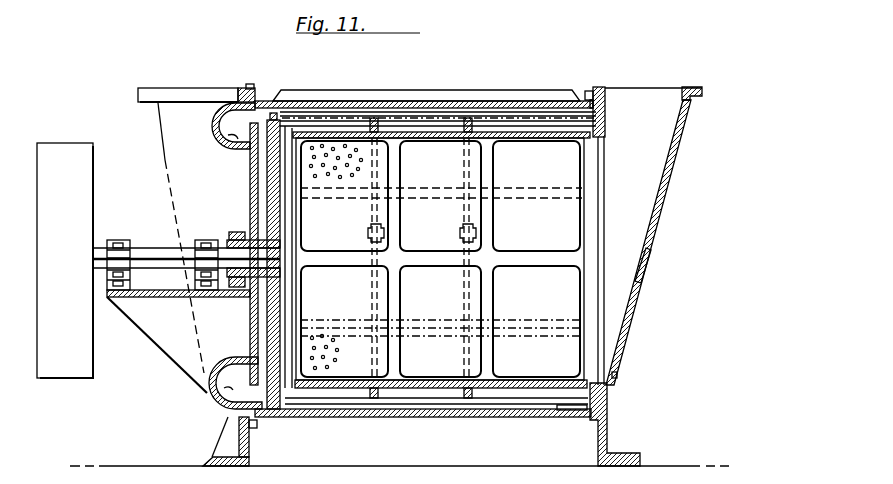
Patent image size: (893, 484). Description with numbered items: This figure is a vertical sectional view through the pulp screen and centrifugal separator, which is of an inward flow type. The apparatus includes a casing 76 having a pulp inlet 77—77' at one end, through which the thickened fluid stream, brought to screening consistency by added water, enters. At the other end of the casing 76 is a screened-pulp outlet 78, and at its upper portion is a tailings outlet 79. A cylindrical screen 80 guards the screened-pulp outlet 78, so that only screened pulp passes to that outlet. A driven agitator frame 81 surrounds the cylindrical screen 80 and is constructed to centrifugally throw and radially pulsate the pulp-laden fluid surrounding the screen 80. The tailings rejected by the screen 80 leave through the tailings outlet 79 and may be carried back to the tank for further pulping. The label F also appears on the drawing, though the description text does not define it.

The casing 76 is at (387, 100).
The pulp inlet 77 is at (196, 218).
The pulp inlet 77' is at (215, 269).
The screened-pulp outlet 78 is at (643, 276).
The tailings outlet 79 is at (546, 95).
The cylindrical screen 80 is at (430, 130).
The driven agitator frame 81 is at (305, 125).
The furnace F is at (497, 100).